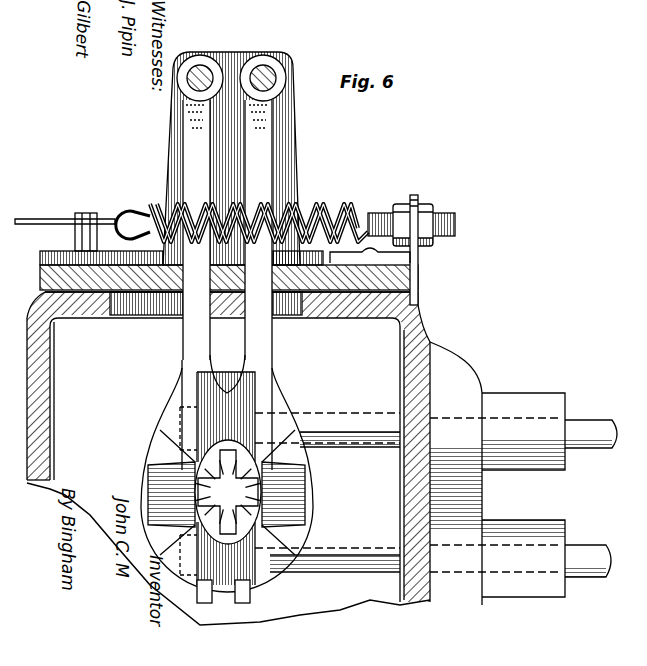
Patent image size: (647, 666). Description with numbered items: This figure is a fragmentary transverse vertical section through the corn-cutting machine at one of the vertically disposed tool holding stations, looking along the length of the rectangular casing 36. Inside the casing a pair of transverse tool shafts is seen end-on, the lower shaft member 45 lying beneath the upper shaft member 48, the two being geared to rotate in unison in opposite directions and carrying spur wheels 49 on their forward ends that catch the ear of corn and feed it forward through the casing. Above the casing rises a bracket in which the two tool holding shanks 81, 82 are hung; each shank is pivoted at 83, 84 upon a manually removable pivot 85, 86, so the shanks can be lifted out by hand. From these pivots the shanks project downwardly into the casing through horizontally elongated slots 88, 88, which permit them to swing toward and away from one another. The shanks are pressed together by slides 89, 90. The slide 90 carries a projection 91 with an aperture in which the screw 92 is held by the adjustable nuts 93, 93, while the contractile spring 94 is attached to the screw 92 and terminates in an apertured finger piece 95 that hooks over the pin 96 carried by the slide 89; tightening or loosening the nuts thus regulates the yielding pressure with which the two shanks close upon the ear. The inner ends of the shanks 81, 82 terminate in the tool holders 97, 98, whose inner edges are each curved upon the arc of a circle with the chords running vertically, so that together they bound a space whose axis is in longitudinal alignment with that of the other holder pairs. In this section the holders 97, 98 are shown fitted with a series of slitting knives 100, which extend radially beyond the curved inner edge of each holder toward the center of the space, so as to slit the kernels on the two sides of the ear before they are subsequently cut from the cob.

The rectangular elongated casing portion 36 is at (432, 342).
The lower shaft member 45 is at (603, 545).
The upper shaft member 48 is at (603, 420).
The spur wheels 49 is at (282, 386).
The tool holding shank 81 is at (190, 175).
The tool holding shank 82 is at (265, 172).
The pivot point 83 is at (203, 58).
The pivot point 84 is at (282, 66).
The manually removable pivot 85 is at (190, 72).
The manually removable pivot 86 is at (263, 62).
The horizontally elongated slots 88 is at (160, 316).
The slide 89 is at (40, 276).
The slide 90 is at (420, 284).
The projection 91 is at (418, 257).
The screw 92 is at (445, 218).
The adjustable nuts 93 is at (426, 198).
The contractile spring 94 is at (345, 210).
The apertured finger piece 95 is at (45, 221).
The pin 96 is at (75, 233).
The tool holder 97 is at (150, 478).
The tool holder 98 is at (305, 487).
The slitting knives 100 is at (300, 515).